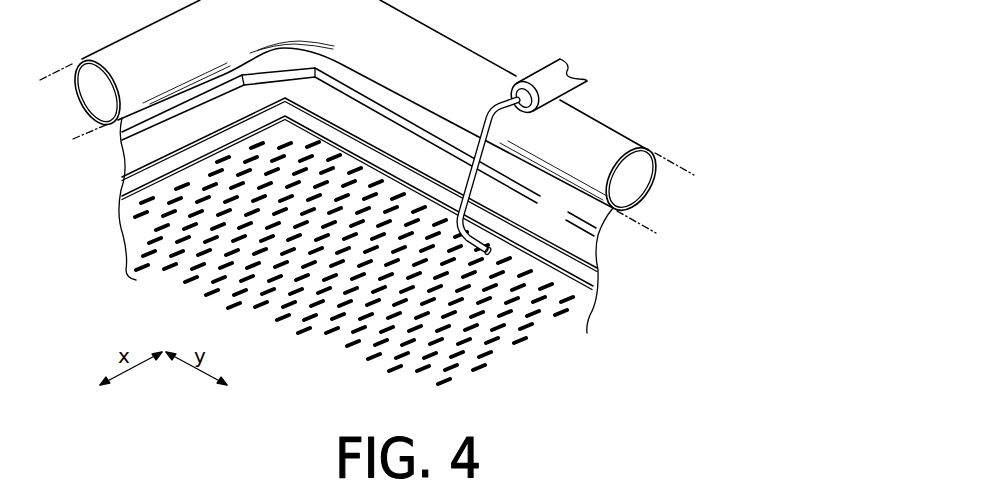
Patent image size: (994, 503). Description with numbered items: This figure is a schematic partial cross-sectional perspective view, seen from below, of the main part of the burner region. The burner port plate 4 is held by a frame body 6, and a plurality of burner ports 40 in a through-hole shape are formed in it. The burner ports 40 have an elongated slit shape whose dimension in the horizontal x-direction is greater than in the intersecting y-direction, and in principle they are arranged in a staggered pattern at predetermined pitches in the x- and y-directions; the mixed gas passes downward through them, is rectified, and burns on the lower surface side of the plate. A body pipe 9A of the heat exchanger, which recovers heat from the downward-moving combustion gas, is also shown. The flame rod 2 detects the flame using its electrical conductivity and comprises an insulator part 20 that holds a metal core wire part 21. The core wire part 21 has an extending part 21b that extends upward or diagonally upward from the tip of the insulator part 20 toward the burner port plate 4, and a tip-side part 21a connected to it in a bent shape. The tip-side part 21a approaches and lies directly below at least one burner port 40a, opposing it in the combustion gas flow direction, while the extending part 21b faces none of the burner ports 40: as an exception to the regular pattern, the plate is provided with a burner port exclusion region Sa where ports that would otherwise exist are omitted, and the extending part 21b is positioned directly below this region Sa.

The flame rod 2 is at (502, 136).
The insulator part 20 is at (548, 72).
The core wire part 21 is at (477, 140).
The tip-side part 21a is at (478, 245).
The extending part 21b is at (502, 107).
The burner port plate 4 is at (352, 180).
The burner ports 40 is at (273, 147).
The burner port 40a is at (471, 277).
The frame body 6 is at (323, 130).
The body pipes 9A is at (605, 147).
The burner port exclusion region Sa is at (467, 260).